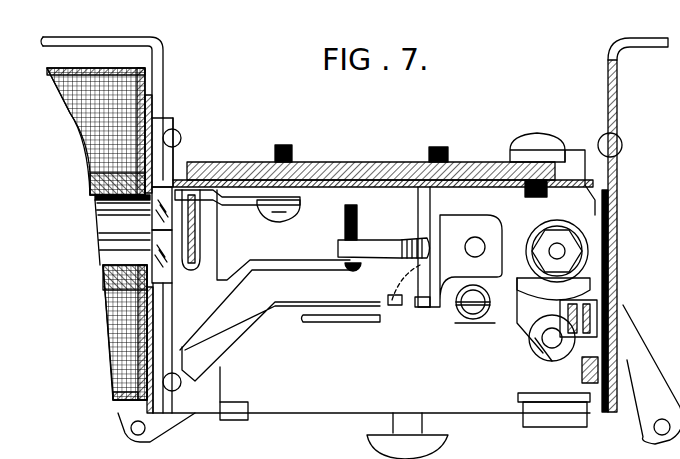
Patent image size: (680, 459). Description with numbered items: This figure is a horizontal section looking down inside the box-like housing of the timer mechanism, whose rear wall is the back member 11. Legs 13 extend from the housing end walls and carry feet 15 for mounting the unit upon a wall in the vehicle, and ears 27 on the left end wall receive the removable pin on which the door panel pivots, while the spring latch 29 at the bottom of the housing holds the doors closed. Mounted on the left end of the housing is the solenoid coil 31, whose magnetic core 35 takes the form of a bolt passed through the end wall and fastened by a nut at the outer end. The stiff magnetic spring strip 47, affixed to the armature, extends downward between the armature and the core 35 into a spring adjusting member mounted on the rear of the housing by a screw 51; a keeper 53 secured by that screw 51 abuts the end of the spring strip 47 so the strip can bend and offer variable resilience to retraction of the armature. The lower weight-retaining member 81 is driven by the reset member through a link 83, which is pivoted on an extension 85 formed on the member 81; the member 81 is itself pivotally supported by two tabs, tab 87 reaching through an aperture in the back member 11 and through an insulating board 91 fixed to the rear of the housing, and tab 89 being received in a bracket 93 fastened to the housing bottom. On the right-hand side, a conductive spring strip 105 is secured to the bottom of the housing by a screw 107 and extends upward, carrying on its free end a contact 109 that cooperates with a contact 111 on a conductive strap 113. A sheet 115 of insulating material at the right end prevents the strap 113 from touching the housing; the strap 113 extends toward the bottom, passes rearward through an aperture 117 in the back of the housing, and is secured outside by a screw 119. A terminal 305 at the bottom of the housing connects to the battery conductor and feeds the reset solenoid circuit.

The back member 11 is at (343, 186).
The legs 13 is at (165, 85).
The feet 15 is at (78, 42).
The ears 27 is at (125, 413).
The spring latch 29 is at (370, 441).
The solenoid coil 31 is at (108, 328).
The magnetic core 35 is at (172, 272).
The magnetic spring strip 47 is at (196, 248).
The screw 51 is at (271, 212).
The keeper 53 is at (213, 218).
The lower weight-retaining member 81 is at (232, 331).
The link 83 is at (344, 225).
The extension 85 is at (400, 258).
The tab 87 is at (388, 162).
The tab 89 is at (398, 308).
The insulating board 91 is at (348, 162).
The bracket 93 is at (430, 308).
The conductive spring strip 105 is at (520, 283).
The screw 107 is at (540, 348).
The contact 109 is at (552, 358).
The contact 111 is at (598, 300).
The conductive strap 113 is at (592, 207).
The insulating sheet 115 is at (611, 222).
The aperture 117 is at (558, 190).
The screw 119 is at (528, 140).
The terminal 305 is at (560, 420).